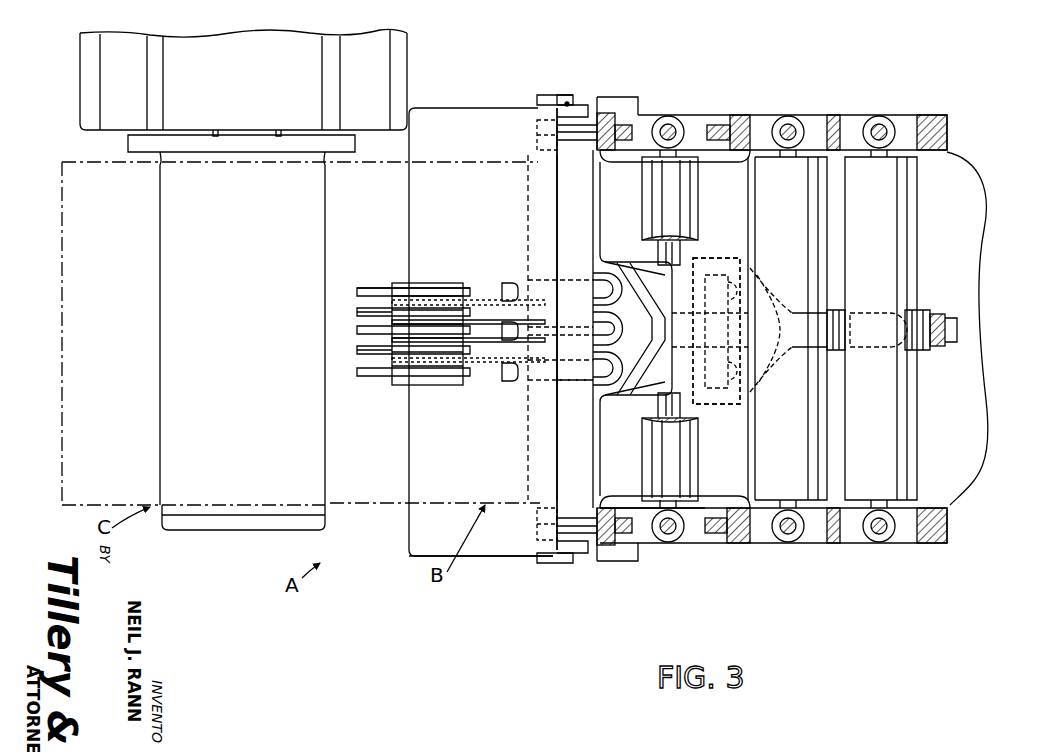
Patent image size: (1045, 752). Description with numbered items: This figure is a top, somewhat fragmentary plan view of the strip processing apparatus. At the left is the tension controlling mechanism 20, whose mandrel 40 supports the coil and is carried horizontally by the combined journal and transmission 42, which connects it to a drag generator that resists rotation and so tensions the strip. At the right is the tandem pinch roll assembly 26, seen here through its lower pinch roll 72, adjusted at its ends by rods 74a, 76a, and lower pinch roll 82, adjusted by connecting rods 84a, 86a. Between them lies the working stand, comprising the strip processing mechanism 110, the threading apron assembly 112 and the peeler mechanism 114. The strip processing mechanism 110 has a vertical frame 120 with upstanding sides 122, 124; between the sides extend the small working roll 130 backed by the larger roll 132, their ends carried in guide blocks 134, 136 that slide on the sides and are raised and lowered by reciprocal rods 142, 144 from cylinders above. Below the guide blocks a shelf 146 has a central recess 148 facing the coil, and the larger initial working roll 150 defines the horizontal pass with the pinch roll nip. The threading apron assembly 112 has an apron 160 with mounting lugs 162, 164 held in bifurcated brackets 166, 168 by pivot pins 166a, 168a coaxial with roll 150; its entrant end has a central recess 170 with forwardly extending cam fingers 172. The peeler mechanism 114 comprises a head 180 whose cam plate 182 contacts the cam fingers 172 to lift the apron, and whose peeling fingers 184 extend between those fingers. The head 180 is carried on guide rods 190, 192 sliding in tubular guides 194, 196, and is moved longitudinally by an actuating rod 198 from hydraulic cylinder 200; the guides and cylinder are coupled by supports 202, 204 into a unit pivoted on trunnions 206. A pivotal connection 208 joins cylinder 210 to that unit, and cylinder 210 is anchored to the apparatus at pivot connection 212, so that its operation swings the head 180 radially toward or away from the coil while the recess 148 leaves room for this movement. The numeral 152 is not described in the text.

The tension controlling mechanism 20 is at (63, 76).
The tandem pinch roll assembly 26 is at (862, 100).
The mandrel 40 is at (322, 528).
The combined journal and transmission 42 is at (320, 89).
The pinch roll 72 is at (818, 200).
The rod 74a is at (788, 543).
The rod 76a is at (790, 116).
The pinch roll 82 is at (935, 220).
The connecting rod 84a is at (879, 543).
The connecting rod 86a is at (884, 116).
The strip processing mechanism 110 is at (577, 232).
The threading apron assembly 112 is at (496, 562).
The peeler mechanism 114 is at (402, 388).
The vertical frame 120 is at (607, 547).
The upstanding side 122 is at (738, 118).
The upstanding side 124 is at (718, 543).
The working roll 130 is at (675, 272).
The back-up roll 132 is at (698, 484).
The guide block 134 is at (672, 116).
The guide block 136 is at (703, 545).
The reciprocal rod 142 is at (678, 124).
The reciprocal rod 144 is at (668, 543).
The shelf 146 is at (757, 472).
The recess 148 is at (612, 268).
The initial working roll 150 is at (594, 203).
The slot 152 is at (540, 140).
The apron 160 is at (488, 547).
The mounting lug 162 is at (575, 106).
The mounting lug 164 is at (580, 555).
The bifurcated bracket 166 is at (611, 97).
The pivot pin 166a is at (570, 95).
The bifurcated bracket 168 is at (628, 562).
The pivot pin 168a is at (562, 567).
The recess 170 is at (510, 282).
The cam fingers 172 is at (405, 298).
The head 180 is at (412, 385).
The cam plate 182 is at (357, 300).
The peeling fingers 184 is at (357, 360).
The guide rod 190 is at (545, 385).
The guide rod 192 is at (573, 285).
The tubular guide 194 is at (645, 385).
The tubular guide 196 is at (668, 240).
The actuating rod 198 is at (604, 326).
The hydraulic cylinder 200 is at (680, 398).
The support 202 is at (592, 420).
The support 204 is at (762, 308).
The trunnions 206 is at (745, 262).
The pivotal connection 208 is at (850, 312).
The cylinder 210 is at (925, 307).
The pivot connection 212 is at (955, 322).